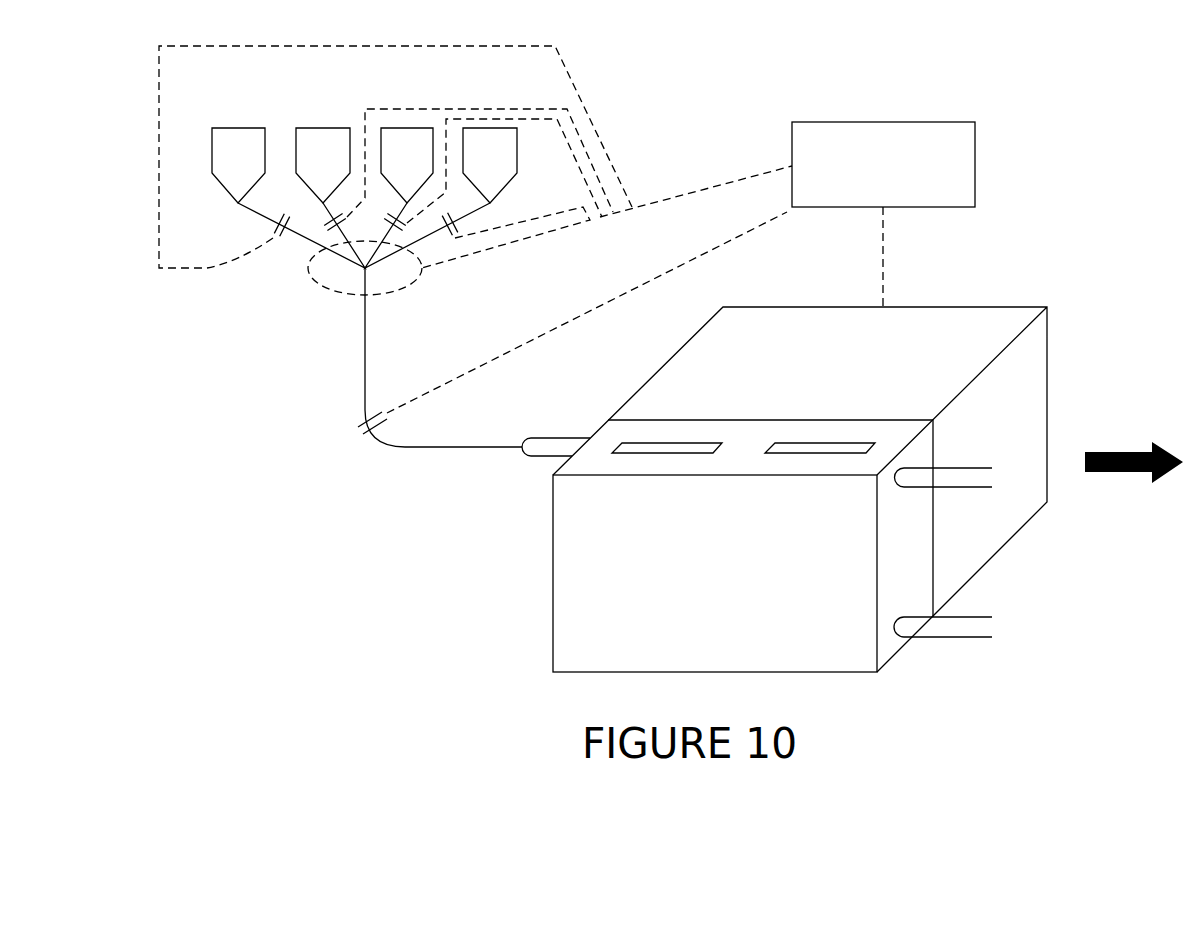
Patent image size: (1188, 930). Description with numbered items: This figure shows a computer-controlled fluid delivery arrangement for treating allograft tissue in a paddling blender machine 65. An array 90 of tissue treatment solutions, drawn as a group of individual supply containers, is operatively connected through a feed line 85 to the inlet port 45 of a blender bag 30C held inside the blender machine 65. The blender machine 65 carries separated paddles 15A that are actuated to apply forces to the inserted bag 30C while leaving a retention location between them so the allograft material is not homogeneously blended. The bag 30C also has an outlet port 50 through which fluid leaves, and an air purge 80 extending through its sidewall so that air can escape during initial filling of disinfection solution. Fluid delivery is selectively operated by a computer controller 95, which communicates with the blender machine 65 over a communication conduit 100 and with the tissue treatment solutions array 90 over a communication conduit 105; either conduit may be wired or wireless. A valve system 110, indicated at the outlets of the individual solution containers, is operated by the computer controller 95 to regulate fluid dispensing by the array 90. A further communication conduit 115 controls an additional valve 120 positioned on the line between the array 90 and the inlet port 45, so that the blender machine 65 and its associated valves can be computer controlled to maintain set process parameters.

The array of tissue treatment solutions 90 is at (197, 103).
The computer controller 95 is at (868, 122).
The communication conduit 100 is at (883, 238).
The communication conduit 105 is at (730, 180).
The valve system 110 is at (270, 243).
The communication conduit 115 is at (718, 240).
The additional valve 120 is at (356, 437).
The feed line 85 is at (413, 513).
The inlet port 45 is at (538, 458).
The blender machine 65 is at (1060, 362).
The blender bag 30C is at (936, 548).
The paddles 15A is at (655, 443).
The air purge 80 is at (966, 490).
The outlet port 50 is at (953, 640).